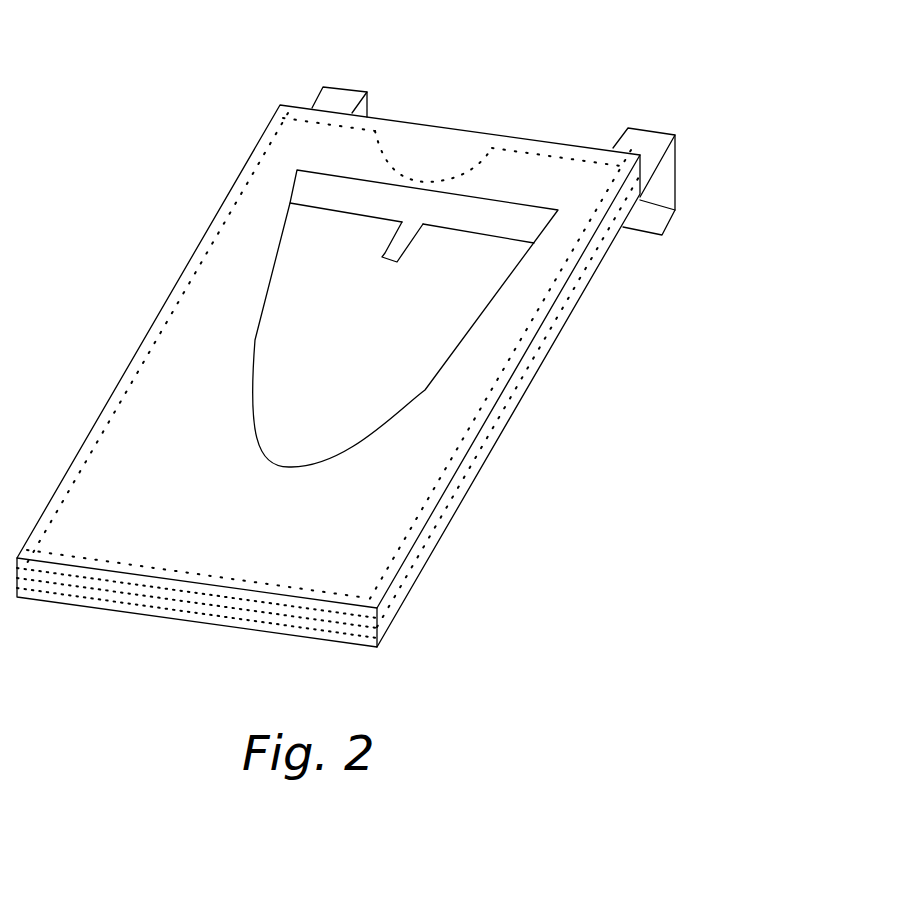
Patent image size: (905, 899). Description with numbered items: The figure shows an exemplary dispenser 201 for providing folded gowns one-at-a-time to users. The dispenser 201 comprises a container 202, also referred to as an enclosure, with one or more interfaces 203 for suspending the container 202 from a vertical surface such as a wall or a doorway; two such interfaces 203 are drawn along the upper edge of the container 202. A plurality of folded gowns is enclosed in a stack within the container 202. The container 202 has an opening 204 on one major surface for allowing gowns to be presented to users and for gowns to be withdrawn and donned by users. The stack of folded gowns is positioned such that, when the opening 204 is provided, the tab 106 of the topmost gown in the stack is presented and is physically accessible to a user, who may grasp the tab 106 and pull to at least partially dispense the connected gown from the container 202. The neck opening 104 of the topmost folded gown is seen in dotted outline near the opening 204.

The dispenser 201 is at (386, 328).
The container 202 is at (155, 320).
The interface 203 is at (337, 97).
The neck opening 104 is at (415, 177).
The opening 204 is at (467, 197).
The tab 106 is at (397, 247).